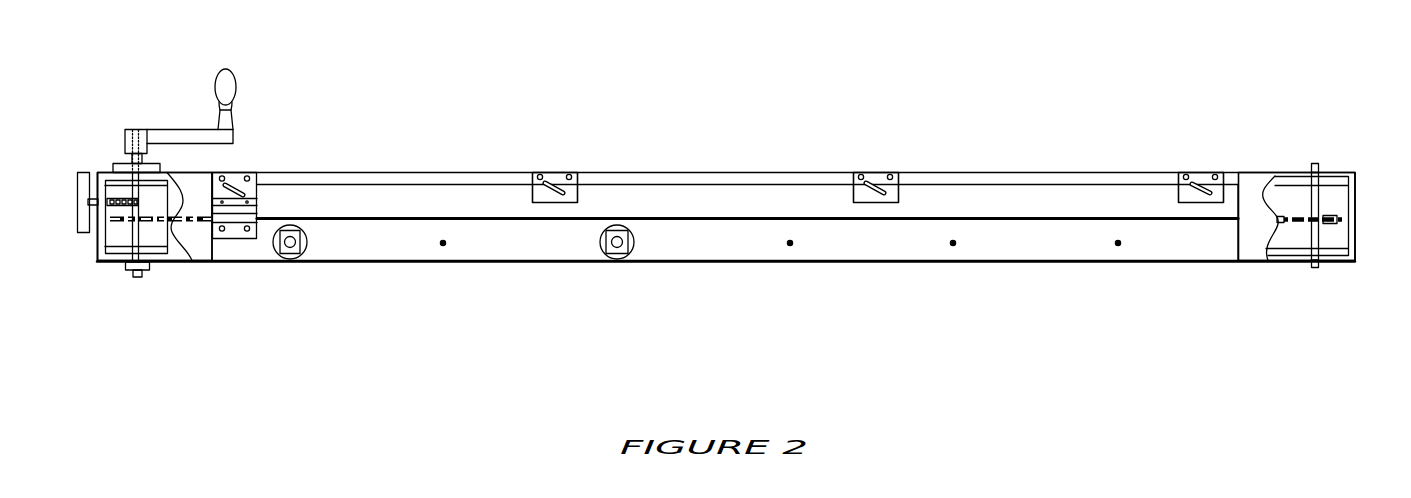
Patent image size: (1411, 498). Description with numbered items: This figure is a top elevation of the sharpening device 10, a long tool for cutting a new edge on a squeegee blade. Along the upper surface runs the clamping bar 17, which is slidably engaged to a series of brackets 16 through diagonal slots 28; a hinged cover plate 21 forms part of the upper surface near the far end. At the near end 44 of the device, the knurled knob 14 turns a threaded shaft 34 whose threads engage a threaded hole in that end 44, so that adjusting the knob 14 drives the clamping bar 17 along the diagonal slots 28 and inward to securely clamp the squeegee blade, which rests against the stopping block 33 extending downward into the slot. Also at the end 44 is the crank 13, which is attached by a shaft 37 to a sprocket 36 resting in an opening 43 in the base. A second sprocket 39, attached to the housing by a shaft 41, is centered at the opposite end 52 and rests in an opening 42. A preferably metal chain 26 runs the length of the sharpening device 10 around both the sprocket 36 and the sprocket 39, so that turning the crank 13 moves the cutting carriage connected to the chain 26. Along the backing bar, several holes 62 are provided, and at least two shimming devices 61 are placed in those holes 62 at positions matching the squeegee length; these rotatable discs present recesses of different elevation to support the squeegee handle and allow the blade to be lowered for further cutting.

The sharpening device 10 is at (710, 284).
The crank 13 is at (230, 81).
The knob 14 is at (83, 178).
The brackets 16 is at (233, 177).
The clamping bar 17 is at (372, 204).
The hinged cover plate 21 is at (1252, 192).
The chain 26 is at (167, 241).
The diagonal slots 28 is at (258, 186).
The stopping block 33 is at (233, 244).
The threaded shaft 34 is at (93, 170).
The sprocket 36 is at (117, 250).
The shaft 37 is at (140, 273).
The sprocket 39 is at (1331, 230).
The shaft 41 is at (1311, 238).
The opening 42 is at (1330, 208).
The opening 43 is at (167, 243).
The end 44 is at (100, 243).
The opposite end 52 is at (1350, 227).
The shimming devices 61 is at (285, 262).
The holes 62 is at (443, 246).